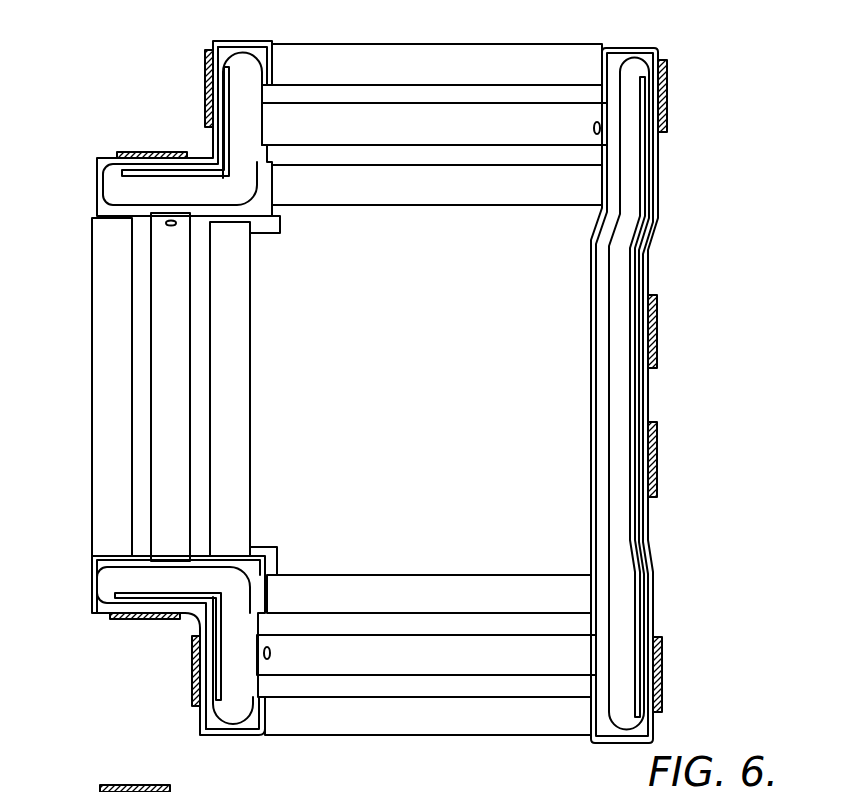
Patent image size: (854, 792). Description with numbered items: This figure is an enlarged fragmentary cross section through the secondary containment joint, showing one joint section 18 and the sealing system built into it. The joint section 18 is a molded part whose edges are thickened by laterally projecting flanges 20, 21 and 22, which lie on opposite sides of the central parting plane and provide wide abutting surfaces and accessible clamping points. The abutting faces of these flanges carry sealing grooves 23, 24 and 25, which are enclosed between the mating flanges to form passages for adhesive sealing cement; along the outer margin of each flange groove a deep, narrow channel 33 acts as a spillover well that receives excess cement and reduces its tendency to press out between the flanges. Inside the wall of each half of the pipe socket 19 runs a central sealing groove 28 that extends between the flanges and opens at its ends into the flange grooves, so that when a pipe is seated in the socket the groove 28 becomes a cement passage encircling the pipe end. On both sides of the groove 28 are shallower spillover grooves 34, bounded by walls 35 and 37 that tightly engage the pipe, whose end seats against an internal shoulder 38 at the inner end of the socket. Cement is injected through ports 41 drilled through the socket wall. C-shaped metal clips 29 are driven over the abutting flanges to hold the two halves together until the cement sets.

The joint section 18 is at (705, 230).
The pipe socket 19 is at (565, 70).
The flange 20 is at (656, 183).
The flange 21 is at (213, 44).
The flange 22 is at (108, 613).
The sealing groove 23 is at (612, 290).
The sealing groove 24 is at (138, 623).
The sealing groove 25 is at (162, 190).
The sealing groove 28 is at (459, 140).
The metal clip 29 is at (205, 82).
The channel 33 is at (227, 143).
The spillover groove 34 is at (496, 96).
The wall 35 is at (447, 79).
The wall 37 is at (439, 199).
The internal shoulder 38 is at (546, 172).
The port 41 is at (593, 128).